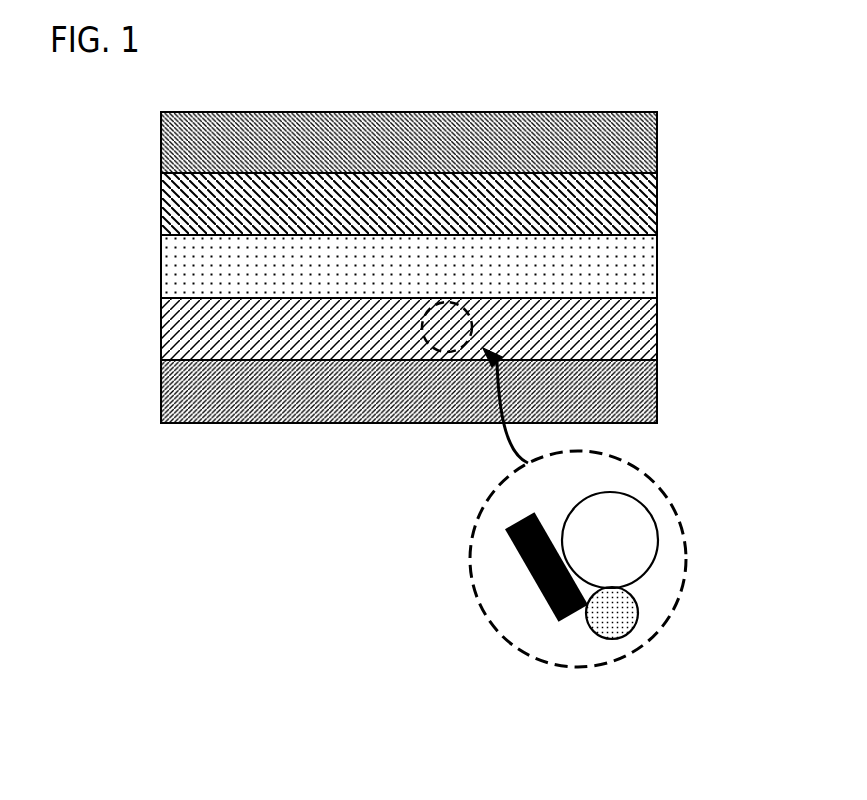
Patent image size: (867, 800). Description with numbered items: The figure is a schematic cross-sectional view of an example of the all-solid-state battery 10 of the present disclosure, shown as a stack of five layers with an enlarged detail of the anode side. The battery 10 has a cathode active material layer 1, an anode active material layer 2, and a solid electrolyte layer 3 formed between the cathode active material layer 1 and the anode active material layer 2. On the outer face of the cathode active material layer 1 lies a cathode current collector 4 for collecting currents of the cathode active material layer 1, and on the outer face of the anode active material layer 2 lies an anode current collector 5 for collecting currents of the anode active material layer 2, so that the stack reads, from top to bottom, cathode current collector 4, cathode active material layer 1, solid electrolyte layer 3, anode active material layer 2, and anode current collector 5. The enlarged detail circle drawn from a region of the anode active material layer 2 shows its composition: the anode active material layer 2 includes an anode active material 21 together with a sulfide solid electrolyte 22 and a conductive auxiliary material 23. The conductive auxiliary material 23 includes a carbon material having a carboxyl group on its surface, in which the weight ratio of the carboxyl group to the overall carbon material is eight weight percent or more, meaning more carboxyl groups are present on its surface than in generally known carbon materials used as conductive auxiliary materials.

The all-solid-state battery 10 is at (672, 52).
The cathode current collector 4 is at (627, 142).
The cathode active material layer 1 is at (627, 204).
The solid electrolyte layer 3 is at (627, 266).
The anode active material layer 2 is at (627, 329).
The anode current collector 5 is at (627, 391).
The anode active material 21 is at (618, 526).
The sulfide solid electrolyte 22 is at (613, 613).
The conductive auxiliary material 23 is at (532, 575).